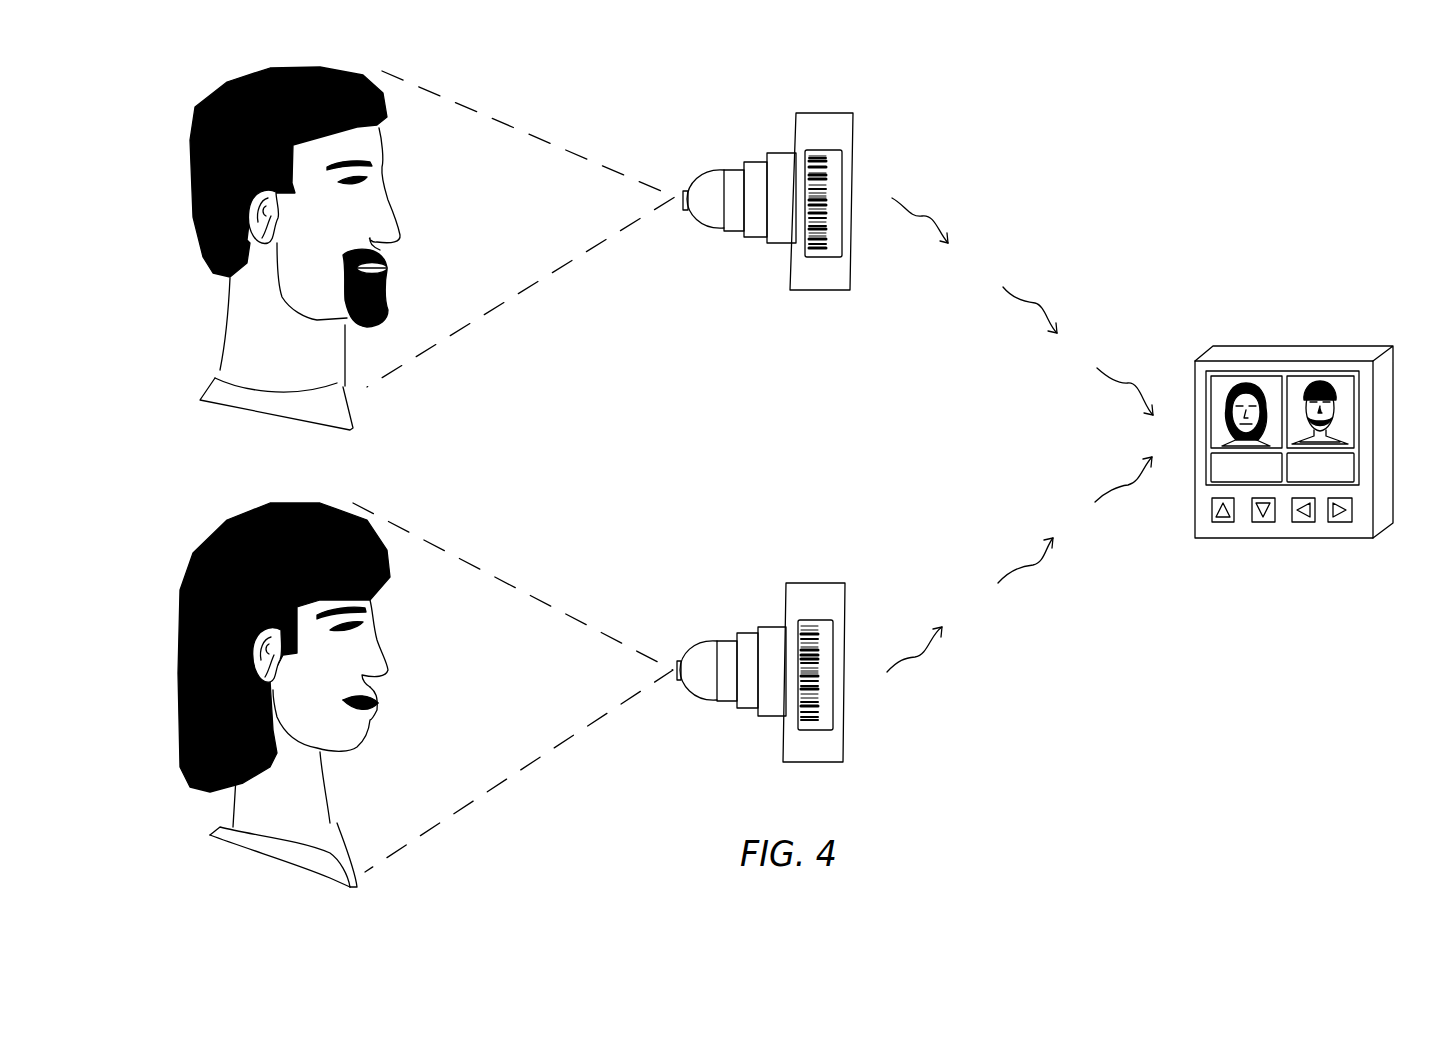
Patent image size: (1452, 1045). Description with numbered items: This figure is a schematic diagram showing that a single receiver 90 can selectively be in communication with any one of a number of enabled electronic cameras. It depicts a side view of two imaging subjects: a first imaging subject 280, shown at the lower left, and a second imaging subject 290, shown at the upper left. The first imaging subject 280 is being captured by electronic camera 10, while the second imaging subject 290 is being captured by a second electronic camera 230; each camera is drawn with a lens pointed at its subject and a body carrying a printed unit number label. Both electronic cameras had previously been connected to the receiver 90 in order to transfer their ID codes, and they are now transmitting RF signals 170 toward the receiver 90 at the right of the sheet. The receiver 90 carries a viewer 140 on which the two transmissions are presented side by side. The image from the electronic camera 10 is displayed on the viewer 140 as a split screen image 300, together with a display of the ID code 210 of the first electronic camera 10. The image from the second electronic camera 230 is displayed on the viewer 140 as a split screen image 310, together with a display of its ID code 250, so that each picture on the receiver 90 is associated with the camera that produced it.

The electronic camera 10 is at (845, 598).
The receiver 90 is at (1284, 433).
The viewer 140 is at (1284, 433).
The RF signals 170 is at (1035, 303).
The ID code 210 is at (1222, 477).
The electronic camera 230 is at (853, 130).
The ID code 250 is at (1353, 470).
The first imaging subject 280 is at (322, 833).
The second imaging subject 290 is at (335, 383).
The split screen image 300 is at (1218, 433).
The split screen image 310 is at (1347, 422).